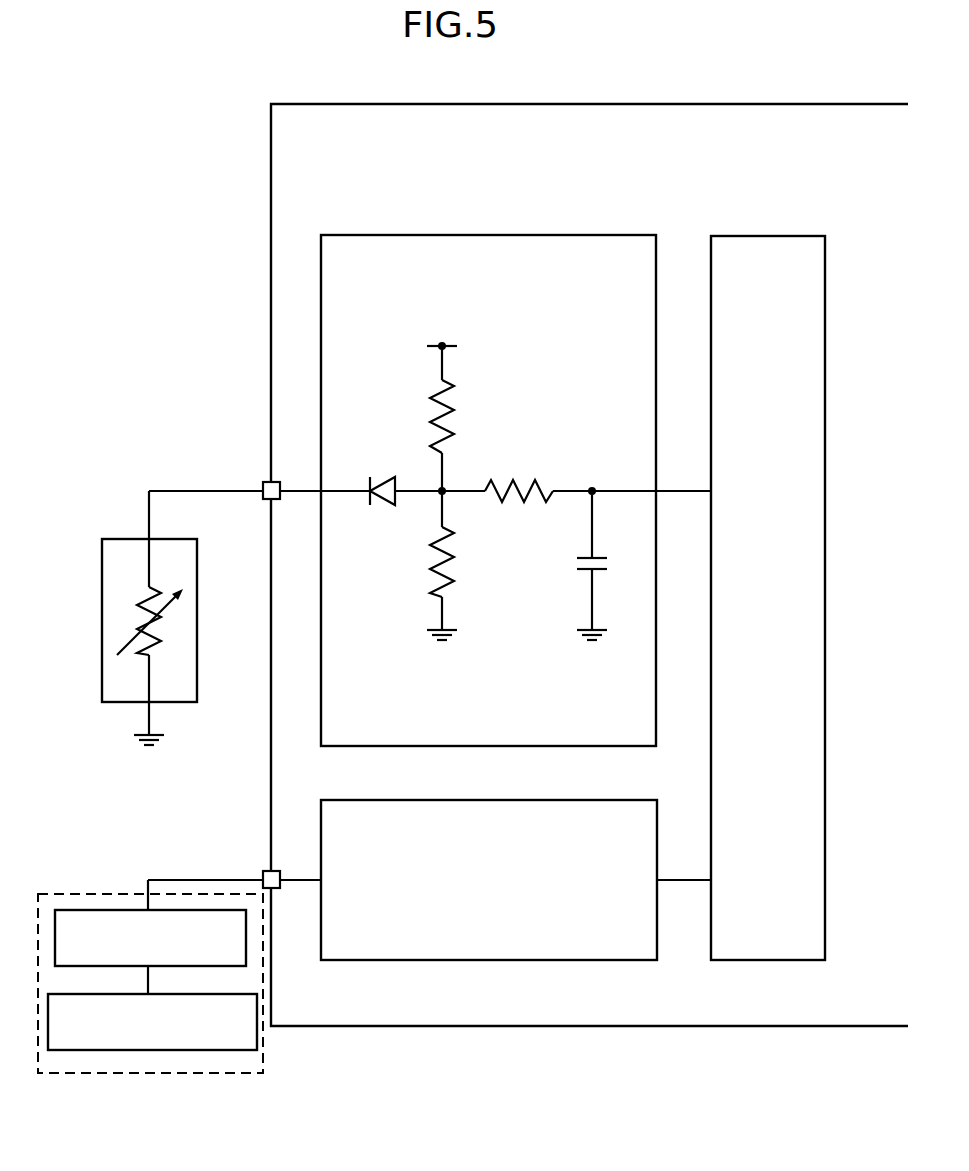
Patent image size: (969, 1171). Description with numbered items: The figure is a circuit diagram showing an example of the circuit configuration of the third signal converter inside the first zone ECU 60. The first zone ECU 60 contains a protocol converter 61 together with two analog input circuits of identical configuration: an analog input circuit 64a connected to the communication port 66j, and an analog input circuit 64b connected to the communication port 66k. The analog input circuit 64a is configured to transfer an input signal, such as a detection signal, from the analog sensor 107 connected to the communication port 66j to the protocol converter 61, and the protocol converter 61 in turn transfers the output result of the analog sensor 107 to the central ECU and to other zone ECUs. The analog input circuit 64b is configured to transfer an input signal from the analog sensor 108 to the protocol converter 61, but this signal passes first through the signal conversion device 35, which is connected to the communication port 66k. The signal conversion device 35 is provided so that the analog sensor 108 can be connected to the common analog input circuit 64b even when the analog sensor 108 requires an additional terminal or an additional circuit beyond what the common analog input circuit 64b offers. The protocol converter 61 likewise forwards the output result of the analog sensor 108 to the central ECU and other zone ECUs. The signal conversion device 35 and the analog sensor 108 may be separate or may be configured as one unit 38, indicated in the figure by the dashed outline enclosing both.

The first zone ECU 60 is at (636, 104).
The protocol converter 61 is at (764, 236).
The analog input circuit 64a is at (433, 235).
The analog input circuit 64b is at (540, 800).
The communication port 66j is at (263, 482).
The communication port 66k is at (263, 871).
The analog sensor 107 is at (123, 539).
The signal conversion device 35 is at (88, 910).
The analog sensor 108 is at (258, 1036).
The unit of signal conversion device and analog sensor 38 is at (172, 1073).